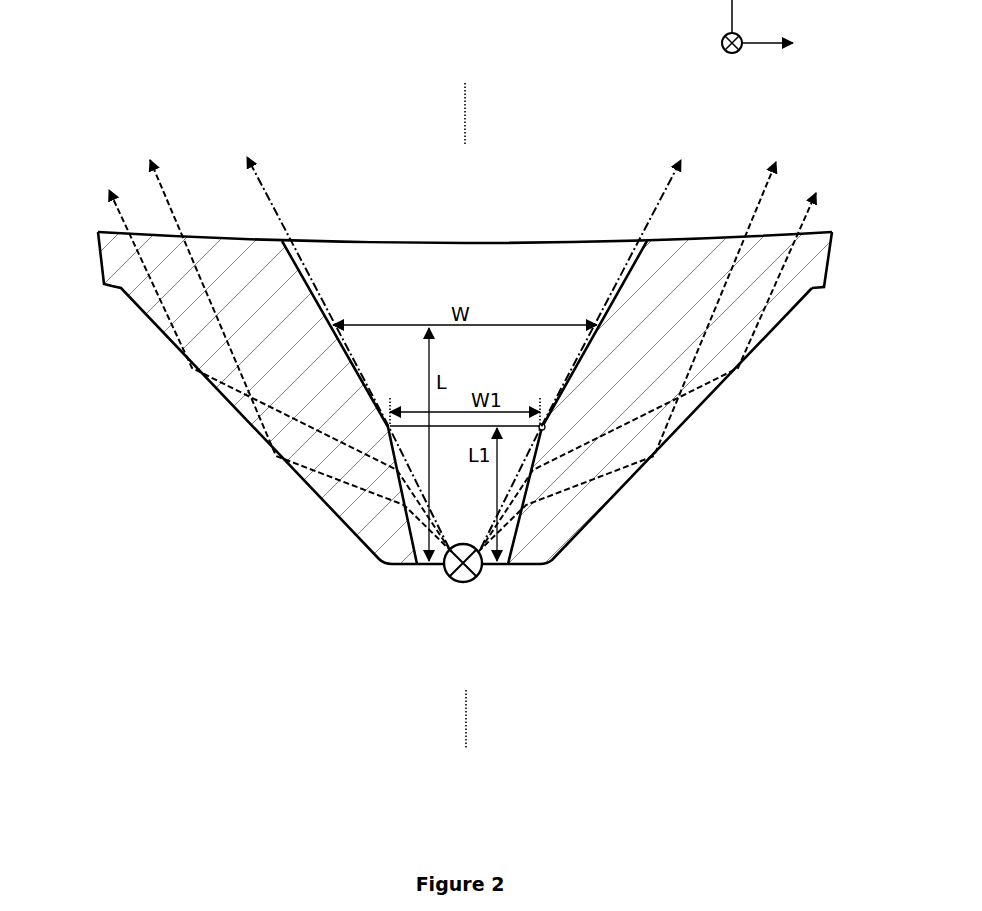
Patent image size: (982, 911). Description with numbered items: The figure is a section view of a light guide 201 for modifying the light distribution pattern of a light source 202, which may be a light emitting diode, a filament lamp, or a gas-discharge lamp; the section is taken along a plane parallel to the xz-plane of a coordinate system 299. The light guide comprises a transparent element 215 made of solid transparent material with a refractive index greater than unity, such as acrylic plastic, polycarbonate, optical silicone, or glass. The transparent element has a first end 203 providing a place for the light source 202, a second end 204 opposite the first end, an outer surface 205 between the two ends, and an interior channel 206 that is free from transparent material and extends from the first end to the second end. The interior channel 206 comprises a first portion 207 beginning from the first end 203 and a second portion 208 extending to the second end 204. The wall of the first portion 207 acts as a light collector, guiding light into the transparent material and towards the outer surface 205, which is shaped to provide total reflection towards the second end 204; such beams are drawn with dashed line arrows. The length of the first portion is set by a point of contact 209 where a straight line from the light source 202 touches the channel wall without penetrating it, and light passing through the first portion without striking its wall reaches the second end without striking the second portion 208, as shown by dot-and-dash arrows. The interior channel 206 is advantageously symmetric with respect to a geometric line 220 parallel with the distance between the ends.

The light guide 201 is at (99, 251).
The light source 202 is at (467, 582).
The first end 203 is at (398, 566).
The second end 204 is at (418, 240).
The outer surface 205 is at (713, 398).
The interior channel 206 is at (533, 282).
The first portion 207 is at (475, 493).
The second portion 208 is at (447, 284).
The point of contact 209 is at (545, 424).
The transparent element 215 is at (290, 348).
The geometric line 220 is at (466, 122).
The coordinate system 299 is at (738, 70).